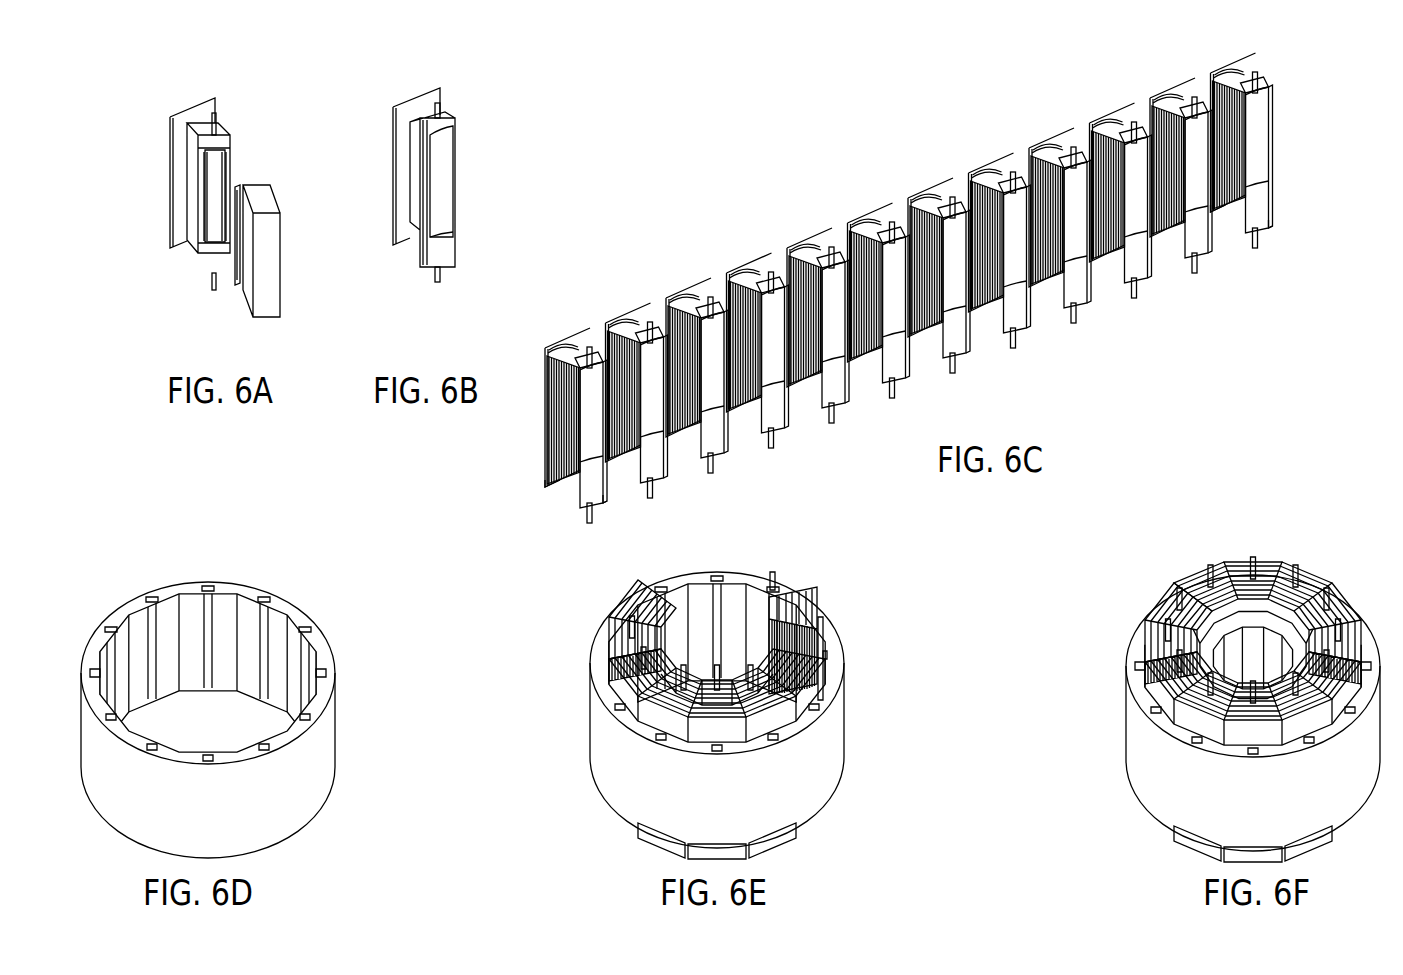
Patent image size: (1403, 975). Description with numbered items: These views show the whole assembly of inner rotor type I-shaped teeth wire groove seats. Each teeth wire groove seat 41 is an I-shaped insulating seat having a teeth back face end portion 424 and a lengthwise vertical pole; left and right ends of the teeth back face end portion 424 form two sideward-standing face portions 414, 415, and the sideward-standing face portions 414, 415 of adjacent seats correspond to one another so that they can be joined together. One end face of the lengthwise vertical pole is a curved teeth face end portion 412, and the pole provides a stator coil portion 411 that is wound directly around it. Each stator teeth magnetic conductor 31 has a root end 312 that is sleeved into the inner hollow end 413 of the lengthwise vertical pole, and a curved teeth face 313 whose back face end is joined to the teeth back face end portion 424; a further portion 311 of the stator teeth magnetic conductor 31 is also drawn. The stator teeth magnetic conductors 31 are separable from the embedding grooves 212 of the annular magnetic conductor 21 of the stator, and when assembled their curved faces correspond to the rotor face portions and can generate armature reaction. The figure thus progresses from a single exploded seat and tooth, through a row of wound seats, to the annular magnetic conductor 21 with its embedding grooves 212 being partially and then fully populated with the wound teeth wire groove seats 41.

In FIG. 6D, the annular magnetic conductor 21 is at (118, 618).
In FIG. 6E, the annular magnetic conductor 21 is at (620, 778).
In FIG. 6F, the annular magnetic conductor 21 is at (1165, 795).
In FIG. 6D, the embedding groove 212 is at (268, 600).
In FIG. 6E, the embedding groove 212 is at (717, 580).
In FIG. 6F, the embedding groove 212 is at (1200, 697).
In FIG. 6A, the stator teeth magnetic conductor 31 is at (239, 221).
In FIG. 6B, the stator teeth magnetic conductor 31 is at (444, 184).
In FIG. 6C, the stator teeth magnetic conductor 31 is at (924, 297).
In FIG. 6E, the stator teeth magnetic conductor 31 is at (793, 639).
In FIG. 6F, the stator teeth magnetic conductor 31 is at (1266, 617).
In FIG. 6A, the groove 311 is at (240, 182).
In FIG. 6E, the groove 311 is at (820, 632).
In FIG. 6F, the groove 311 is at (1181, 669).
In FIG. 6A, the root end 312 is at (243, 283).
In FIG. 6A, the curved teeth face 313 is at (270, 307).
In FIG. 6A, the teeth wire groove seat 41 is at (111, 145).
In FIG. 6B, the teeth wire groove seat 41 is at (447, 252).
In FIG. 6C, the teeth wire groove seat 41 is at (914, 288).
In FIG. 6E, the teeth wire groove seat 41 is at (820, 607).
In FIG. 6F, the teeth wire groove seat 41 is at (1262, 572).
In FIG. 6C, the stator coil portion 411 is at (891, 260).
In FIG. 6E, the stator coil portion 411 is at (797, 605).
In FIG. 6F, the stator coil portion 411 is at (1253, 641).
In FIG. 6A, the curved teeth face end portion 412 is at (205, 268).
In FIG. 6A, the inner hollow end 413 is at (215, 198).
In FIG. 6C, the sideward-standing face portion 414 is at (572, 505).
In FIG. 6E, the sideward-standing face portion 414 is at (672, 675).
In FIG. 6F, the sideward-standing face portion 414 is at (1200, 715).
In FIG. 6C, the sideward-standing face portion 415 is at (606, 503).
In FIG. 6E, the sideward-standing face portion 415 is at (676, 699).
In FIG. 6F, the sideward-standing face portion 415 is at (1205, 723).
In FIG. 6A, the teeth back face end portion 424 is at (222, 172).